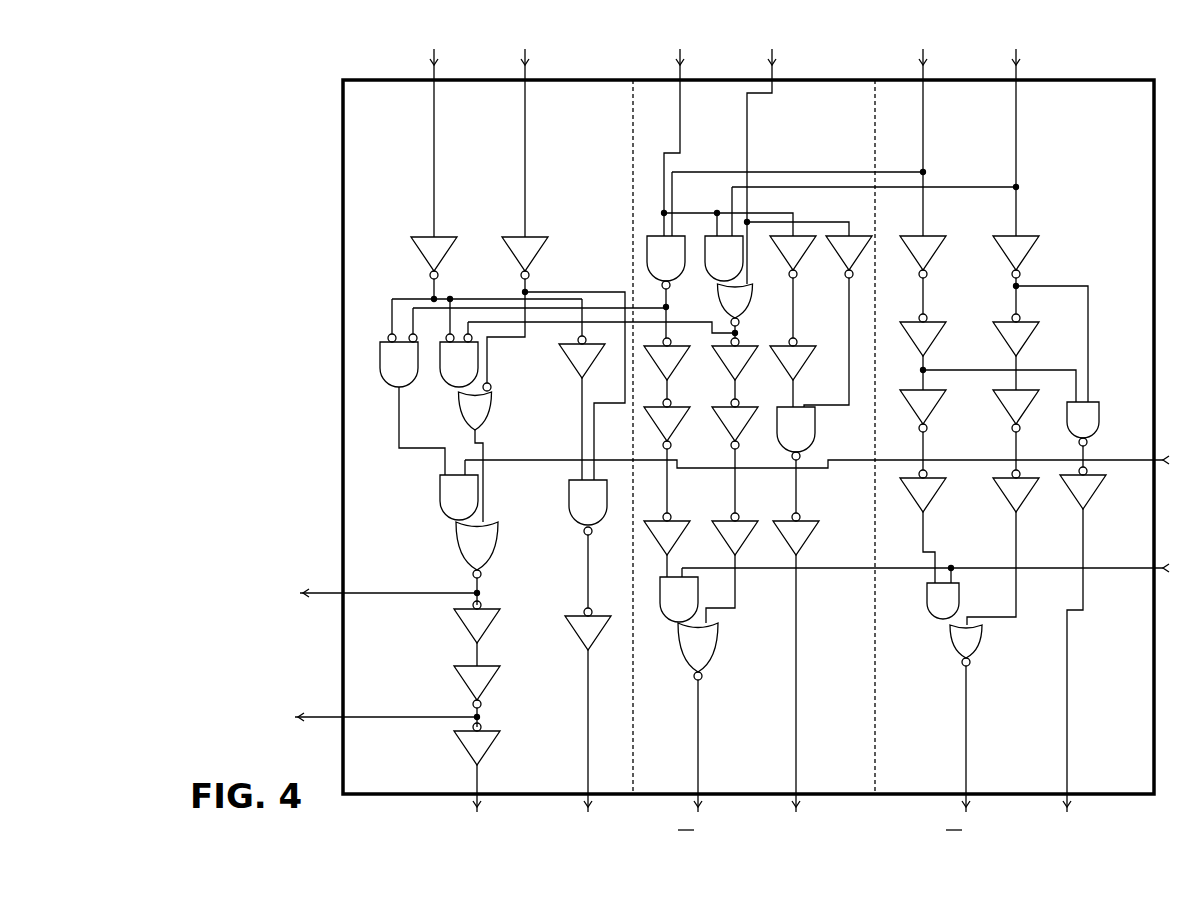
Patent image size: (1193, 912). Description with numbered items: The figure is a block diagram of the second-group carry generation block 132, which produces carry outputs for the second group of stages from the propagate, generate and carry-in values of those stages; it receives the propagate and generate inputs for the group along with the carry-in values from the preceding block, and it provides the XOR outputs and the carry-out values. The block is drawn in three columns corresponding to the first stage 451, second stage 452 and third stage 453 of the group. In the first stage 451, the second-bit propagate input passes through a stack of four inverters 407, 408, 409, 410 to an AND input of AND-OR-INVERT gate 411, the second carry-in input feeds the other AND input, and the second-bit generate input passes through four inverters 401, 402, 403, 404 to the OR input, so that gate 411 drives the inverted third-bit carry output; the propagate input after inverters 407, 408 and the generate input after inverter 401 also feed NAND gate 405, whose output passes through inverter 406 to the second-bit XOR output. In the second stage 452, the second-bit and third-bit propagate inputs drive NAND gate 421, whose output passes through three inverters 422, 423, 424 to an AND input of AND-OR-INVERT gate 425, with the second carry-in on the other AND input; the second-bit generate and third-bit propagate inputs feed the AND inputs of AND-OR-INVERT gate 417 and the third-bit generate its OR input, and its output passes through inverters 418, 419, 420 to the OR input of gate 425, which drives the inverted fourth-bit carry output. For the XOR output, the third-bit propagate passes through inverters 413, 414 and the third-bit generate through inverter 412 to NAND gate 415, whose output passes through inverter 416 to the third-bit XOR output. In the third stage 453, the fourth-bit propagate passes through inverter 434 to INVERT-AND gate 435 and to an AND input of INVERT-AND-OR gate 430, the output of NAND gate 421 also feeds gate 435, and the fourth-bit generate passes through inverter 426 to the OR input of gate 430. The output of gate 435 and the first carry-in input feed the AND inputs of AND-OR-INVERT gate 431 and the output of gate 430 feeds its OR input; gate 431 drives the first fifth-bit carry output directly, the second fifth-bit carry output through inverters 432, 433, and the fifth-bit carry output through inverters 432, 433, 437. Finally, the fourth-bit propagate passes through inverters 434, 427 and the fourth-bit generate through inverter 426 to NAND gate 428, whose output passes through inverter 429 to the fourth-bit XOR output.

The Group 2 Carry Generation Block 132 is at (695, 433).
The third stage of second group 453 is at (515, 431).
The second stage of second group 452 is at (829, 433).
The first stage of second group 451 is at (1002, 433).
The inverter 401 is at (1040, 319).
The inverter 402 is at (1016, 352).
The inverter 403 is at (1016, 430).
The inverter 404 is at (1003, 547).
The NAND gate 405 is at (1083, 434).
The inverter 406 is at (1083, 639).
The inverter 407 is at (923, 275).
The inverter 408 is at (988, 358).
The inverter 409 is at (923, 430).
The inverter 410 is at (923, 526).
The AND-OR-INVERT gate 411 is at (950, 690).
The inverter 412 is at (838, 321).
The inverter 413 is at (793, 287).
The inverter 414 is at (793, 372).
The NAND gate 415 is at (796, 460).
The inverter 416 is at (796, 662).
The AND-OR-INVERT gate 417 is at (720, 287).
The inverter 418 is at (735, 368).
The inverter 419 is at (735, 456).
The inverter 420 is at (732, 568).
The NAND gate 421 is at (666, 287).
The inverter 422 is at (667, 368).
The inverter 423 is at (667, 456).
The inverter 424 is at (667, 545).
The AND-OR-INVERT gate 425 is at (686, 690).
The inverter 426 is at (556, 358).
The inverter 427 is at (582, 408).
The NAND gate 428 is at (588, 544).
The inverter 429 is at (588, 710).
The INVERT-AND-OR gate 430 is at (482, 428).
The AND-OR-INVERT gate 431 is at (463, 540).
The inverter 432 is at (477, 633).
The inverter 433 is at (477, 696).
The inverter 434 is at (434, 269).
The INVERT-AND gate 435 is at (412, 404).
The inverter 437 is at (477, 767).